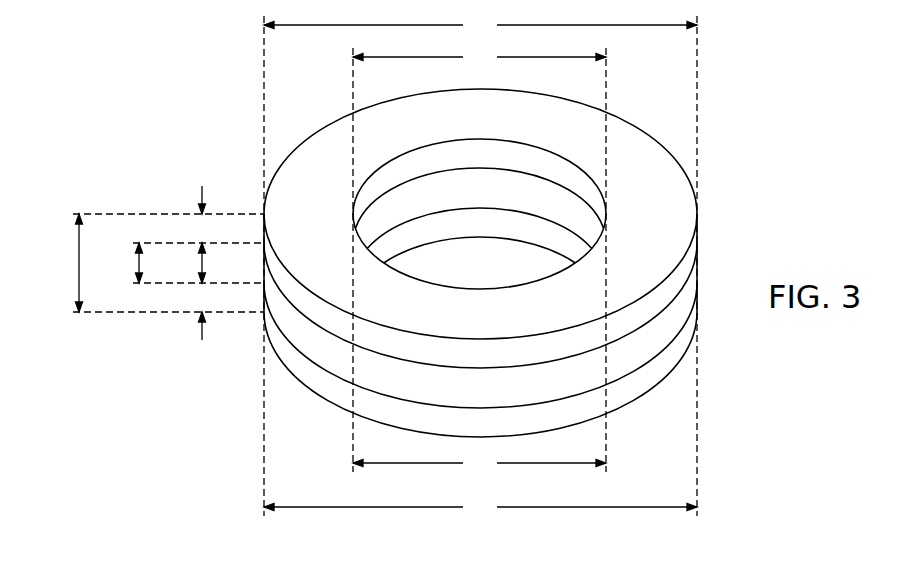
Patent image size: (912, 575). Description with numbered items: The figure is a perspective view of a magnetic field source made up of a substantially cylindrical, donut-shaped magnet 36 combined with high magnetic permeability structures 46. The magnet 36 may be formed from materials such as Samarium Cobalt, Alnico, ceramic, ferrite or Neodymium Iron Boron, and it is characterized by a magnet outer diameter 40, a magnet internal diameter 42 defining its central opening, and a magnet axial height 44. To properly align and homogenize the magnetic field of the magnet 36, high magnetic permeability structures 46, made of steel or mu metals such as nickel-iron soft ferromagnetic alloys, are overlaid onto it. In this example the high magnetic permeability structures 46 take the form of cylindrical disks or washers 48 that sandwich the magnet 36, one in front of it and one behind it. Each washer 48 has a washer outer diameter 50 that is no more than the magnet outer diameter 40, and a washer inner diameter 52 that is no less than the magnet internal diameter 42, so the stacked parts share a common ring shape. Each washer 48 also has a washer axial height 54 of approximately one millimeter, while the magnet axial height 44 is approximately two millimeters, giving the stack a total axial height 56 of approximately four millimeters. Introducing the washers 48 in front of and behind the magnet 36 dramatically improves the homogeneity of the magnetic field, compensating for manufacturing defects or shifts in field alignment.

The magnet 36 is at (532, 293).
The magnet outer diameter 40 is at (480, 507).
The magnet internal diameter 42 is at (479, 463).
The magnet axial height 44 is at (137, 266).
The high magnetic permeability structures 46 is at (640, 187).
The washers 48 is at (650, 226).
The washer outer diameter 50 is at (480, 25).
The washer inner diameter 52 is at (479, 57).
The washer axial height 54 is at (203, 263).
The total axial height 56 is at (77, 275).